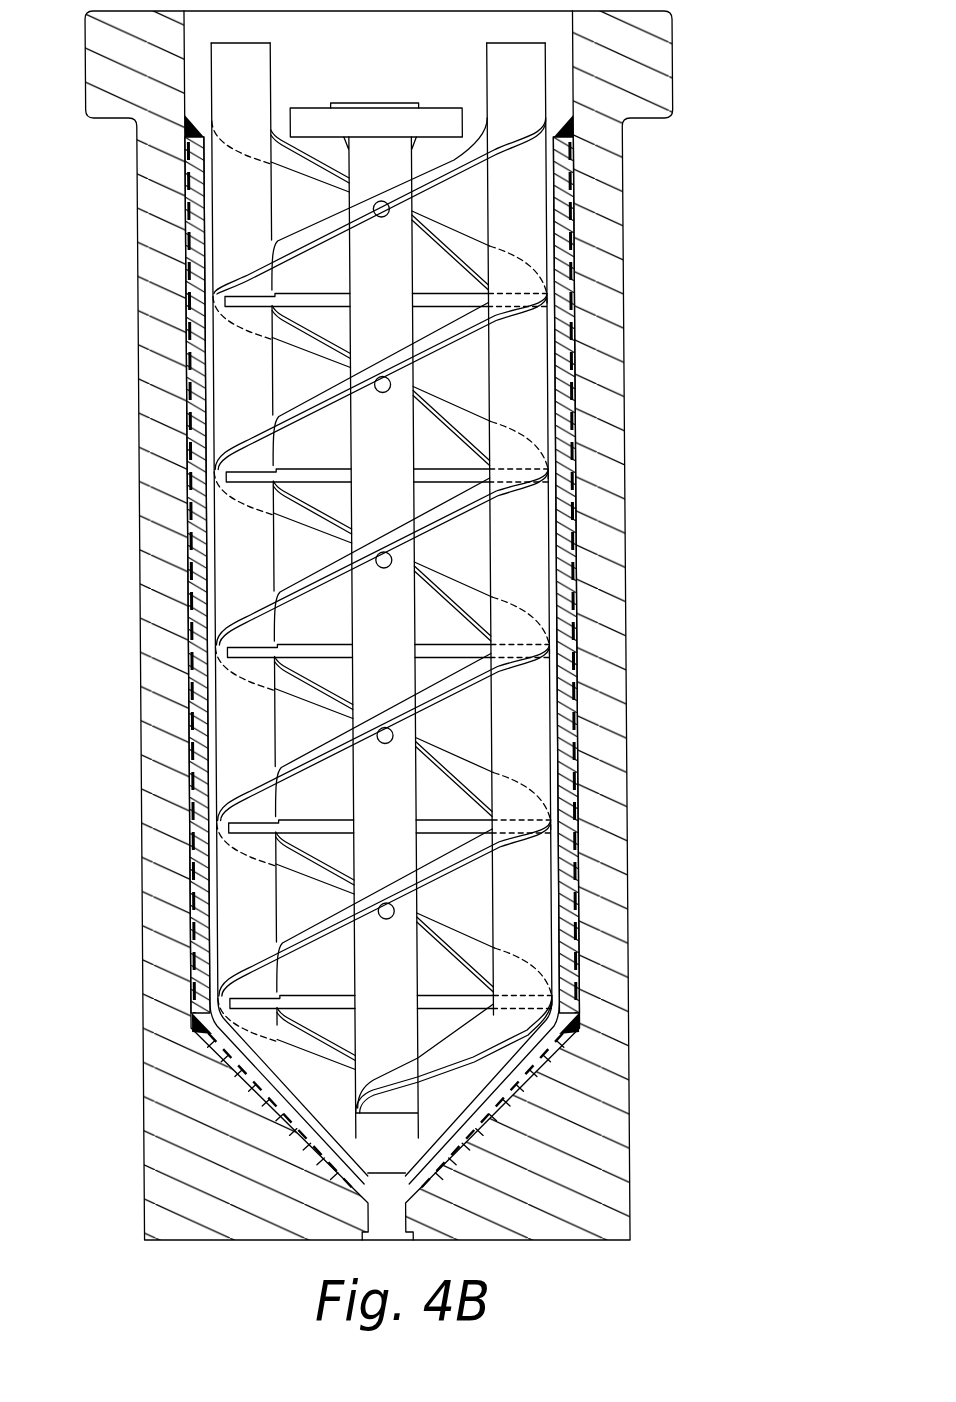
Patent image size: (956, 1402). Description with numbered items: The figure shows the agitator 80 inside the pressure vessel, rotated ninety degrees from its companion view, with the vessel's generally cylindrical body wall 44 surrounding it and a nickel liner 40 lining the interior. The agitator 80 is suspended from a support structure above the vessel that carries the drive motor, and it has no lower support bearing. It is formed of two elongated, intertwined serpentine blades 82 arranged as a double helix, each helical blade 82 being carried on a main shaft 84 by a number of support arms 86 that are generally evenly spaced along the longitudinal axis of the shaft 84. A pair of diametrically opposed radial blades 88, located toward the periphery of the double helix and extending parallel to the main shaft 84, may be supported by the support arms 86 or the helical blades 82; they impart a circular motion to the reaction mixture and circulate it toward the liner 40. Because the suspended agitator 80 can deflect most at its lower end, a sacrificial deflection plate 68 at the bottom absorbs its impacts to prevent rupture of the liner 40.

The liner 40 is at (200, 678).
The cylindrical body wall 44 is at (614, 576).
The sacrificial deflection plate 68 is at (550, 1018).
The agitator 80 is at (382, 78).
The serpentine blades 82 is at (463, 234).
The main shaft 84 is at (386, 426).
The support arms 86 is at (305, 822).
The radial blades 88 is at (231, 563).